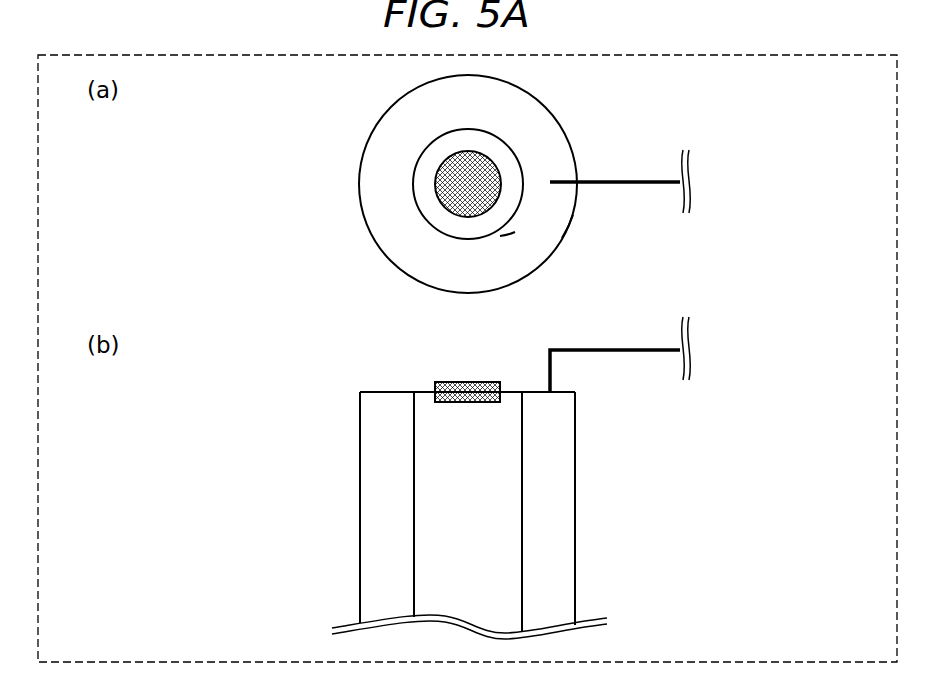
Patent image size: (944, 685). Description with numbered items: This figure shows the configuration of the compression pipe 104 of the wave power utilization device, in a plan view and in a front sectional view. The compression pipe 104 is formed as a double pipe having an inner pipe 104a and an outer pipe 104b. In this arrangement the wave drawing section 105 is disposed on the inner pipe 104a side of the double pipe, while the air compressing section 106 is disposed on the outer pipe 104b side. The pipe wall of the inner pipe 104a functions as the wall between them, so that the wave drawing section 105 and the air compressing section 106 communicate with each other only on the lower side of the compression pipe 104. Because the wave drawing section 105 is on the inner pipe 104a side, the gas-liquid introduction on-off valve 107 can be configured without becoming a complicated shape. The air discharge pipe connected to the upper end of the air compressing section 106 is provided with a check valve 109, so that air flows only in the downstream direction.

The compression pipe 104 is at (506, 297).
The inner pipe 104a is at (515, 232).
The outer pipe 104b is at (573, 215).
The wave drawing section 105 is at (423, 197).
The air compressing section 106 is at (403, 237).
The gas-liquid introduction on-off valve 107 is at (440, 182).
The check valve 109 is at (628, 182).